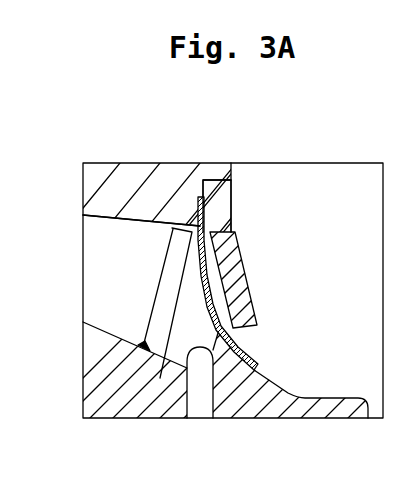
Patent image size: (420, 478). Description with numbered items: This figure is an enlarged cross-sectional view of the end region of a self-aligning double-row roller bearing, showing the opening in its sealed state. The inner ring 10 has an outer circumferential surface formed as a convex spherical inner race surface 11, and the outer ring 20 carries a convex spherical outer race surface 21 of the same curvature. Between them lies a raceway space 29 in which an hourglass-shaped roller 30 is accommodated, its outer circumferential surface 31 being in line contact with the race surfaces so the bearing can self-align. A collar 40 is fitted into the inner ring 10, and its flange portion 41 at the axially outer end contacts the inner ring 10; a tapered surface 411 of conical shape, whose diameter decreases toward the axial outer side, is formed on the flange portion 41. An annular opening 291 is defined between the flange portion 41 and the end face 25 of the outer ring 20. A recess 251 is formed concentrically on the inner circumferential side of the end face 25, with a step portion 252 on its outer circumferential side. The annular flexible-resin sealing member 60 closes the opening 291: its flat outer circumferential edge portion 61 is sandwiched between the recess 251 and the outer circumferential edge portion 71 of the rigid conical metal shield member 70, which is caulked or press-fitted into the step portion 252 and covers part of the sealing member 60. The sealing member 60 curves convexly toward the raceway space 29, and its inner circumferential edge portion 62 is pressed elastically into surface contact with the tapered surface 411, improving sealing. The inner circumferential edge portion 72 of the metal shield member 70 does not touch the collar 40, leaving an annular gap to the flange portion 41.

The inner ring 10 is at (93, 386).
The inner race surface 11 is at (85, 320).
The outer ring 20 is at (93, 187).
The outer race surface 21 is at (85, 217).
The end face 25 is at (231, 163).
The raceway space 29 is at (172, 217).
The roller 30 is at (98, 272).
The outer circumferential surface 31 is at (132, 217).
The collar 40 is at (325, 397).
The flange portion 41 is at (186, 406).
The sealing member 60 is at (202, 301).
The outer circumferential edge portion 61 is at (205, 201).
The inner circumferential edge portion 62 is at (245, 355).
The metal shield member 70 is at (250, 268).
The outer circumferential edge portion 71 is at (222, 185).
The inner circumferential edge portion 72 is at (258, 325).
The recess 251 is at (215, 222).
The step portion 252 is at (215, 188).
The opening 291 is at (166, 397).
The tapered surface 411 is at (263, 376).